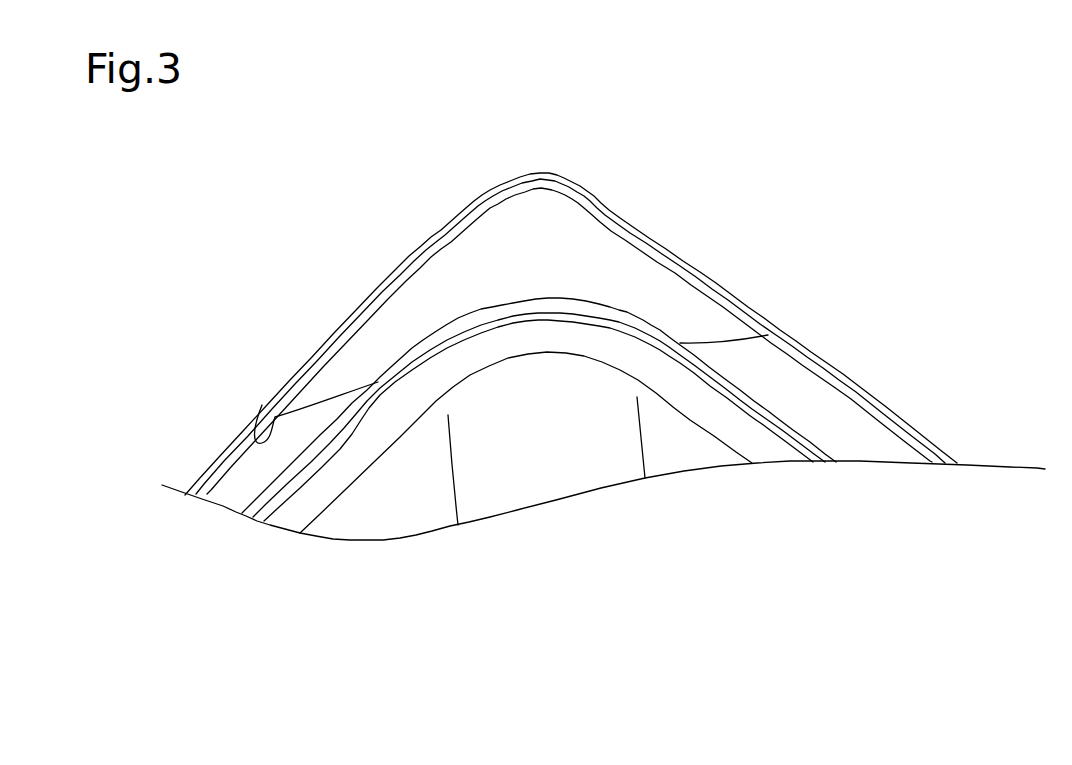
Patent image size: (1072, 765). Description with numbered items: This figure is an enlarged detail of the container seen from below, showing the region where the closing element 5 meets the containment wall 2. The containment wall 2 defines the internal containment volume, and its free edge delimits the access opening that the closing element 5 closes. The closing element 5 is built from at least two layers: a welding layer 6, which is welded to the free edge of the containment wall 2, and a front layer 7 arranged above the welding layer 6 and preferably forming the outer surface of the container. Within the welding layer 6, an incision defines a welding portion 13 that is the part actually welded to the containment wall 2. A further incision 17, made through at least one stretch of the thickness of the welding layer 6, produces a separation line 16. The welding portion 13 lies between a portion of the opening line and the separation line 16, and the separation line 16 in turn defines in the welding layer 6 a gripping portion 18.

The containment wall 2 is at (532, 460).
The closing element 5 is at (823, 360).
The welding layer 6 is at (898, 413).
The front layer 7 is at (567, 180).
The welding portion 13 is at (233, 488).
The separation line 16 is at (728, 338).
The further incision 17 is at (246, 436).
The gripping portion 18 is at (617, 272).